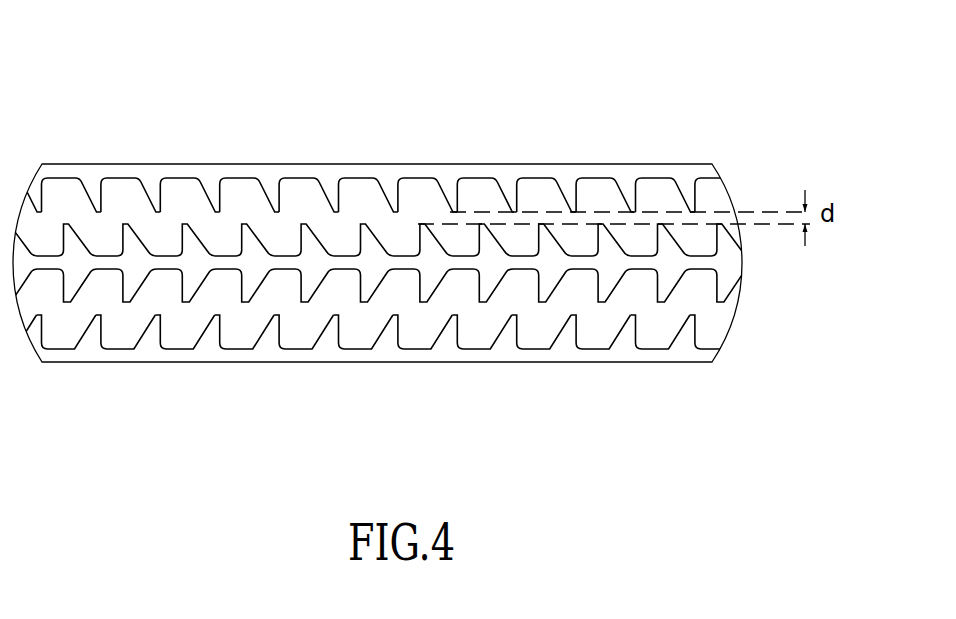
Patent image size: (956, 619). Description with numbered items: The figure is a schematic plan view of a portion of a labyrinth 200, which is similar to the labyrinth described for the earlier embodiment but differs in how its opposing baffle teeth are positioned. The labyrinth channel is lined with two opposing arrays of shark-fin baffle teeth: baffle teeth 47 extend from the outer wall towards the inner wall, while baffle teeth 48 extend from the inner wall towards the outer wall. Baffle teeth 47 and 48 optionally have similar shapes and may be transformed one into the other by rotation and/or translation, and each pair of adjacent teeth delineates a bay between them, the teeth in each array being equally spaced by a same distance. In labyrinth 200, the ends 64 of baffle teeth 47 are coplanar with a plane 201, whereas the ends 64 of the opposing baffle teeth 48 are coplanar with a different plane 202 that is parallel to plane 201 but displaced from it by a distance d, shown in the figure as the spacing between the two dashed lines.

The labyrinth 200 is at (517, 108).
The plane 201 is at (758, 210).
The plane 202 is at (758, 227).
The shark-fin baffle teeth 47 is at (213, 198).
The shark-fin baffle teeth 48 is at (132, 212).
The ends 64 is at (65, 222).